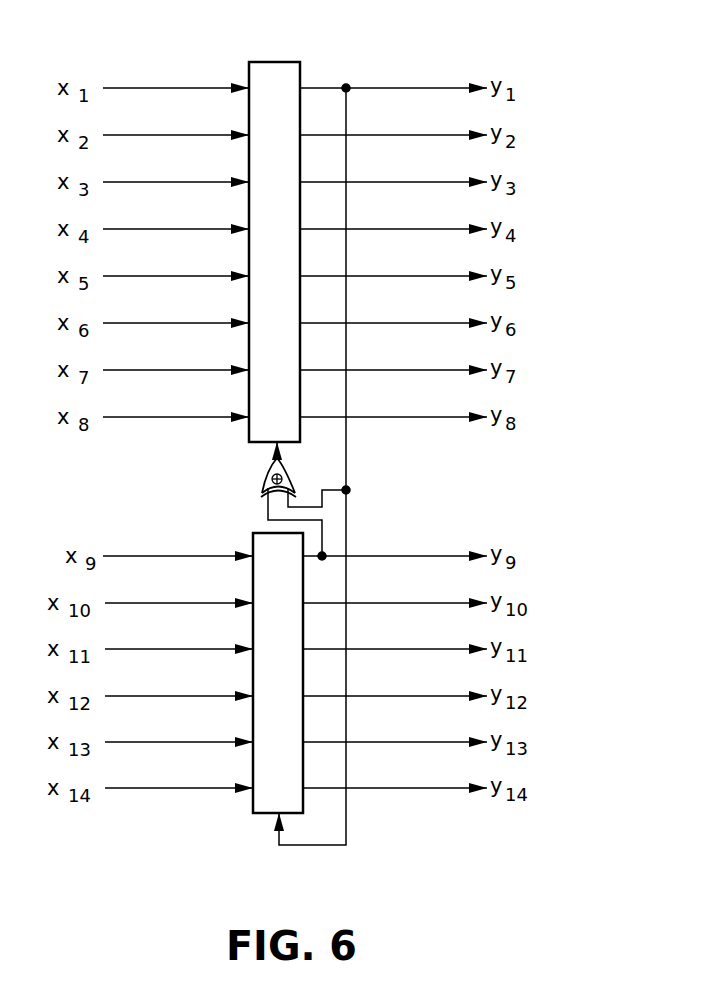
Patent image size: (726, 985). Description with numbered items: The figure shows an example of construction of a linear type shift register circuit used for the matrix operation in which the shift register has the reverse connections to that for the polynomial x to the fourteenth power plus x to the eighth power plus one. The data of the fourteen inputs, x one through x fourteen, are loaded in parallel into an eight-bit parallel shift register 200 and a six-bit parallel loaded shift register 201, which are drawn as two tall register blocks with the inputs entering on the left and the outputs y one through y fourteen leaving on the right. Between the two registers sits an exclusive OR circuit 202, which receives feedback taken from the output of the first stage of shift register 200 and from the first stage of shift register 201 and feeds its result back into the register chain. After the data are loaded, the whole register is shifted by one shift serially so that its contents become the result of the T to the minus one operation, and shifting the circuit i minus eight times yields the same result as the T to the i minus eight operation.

The 8-bit parallel shift register 200 is at (300, 62).
The 6-bit parallel loaded shift register 201 is at (253, 813).
The exclusive OR circuit 202 is at (263, 481).